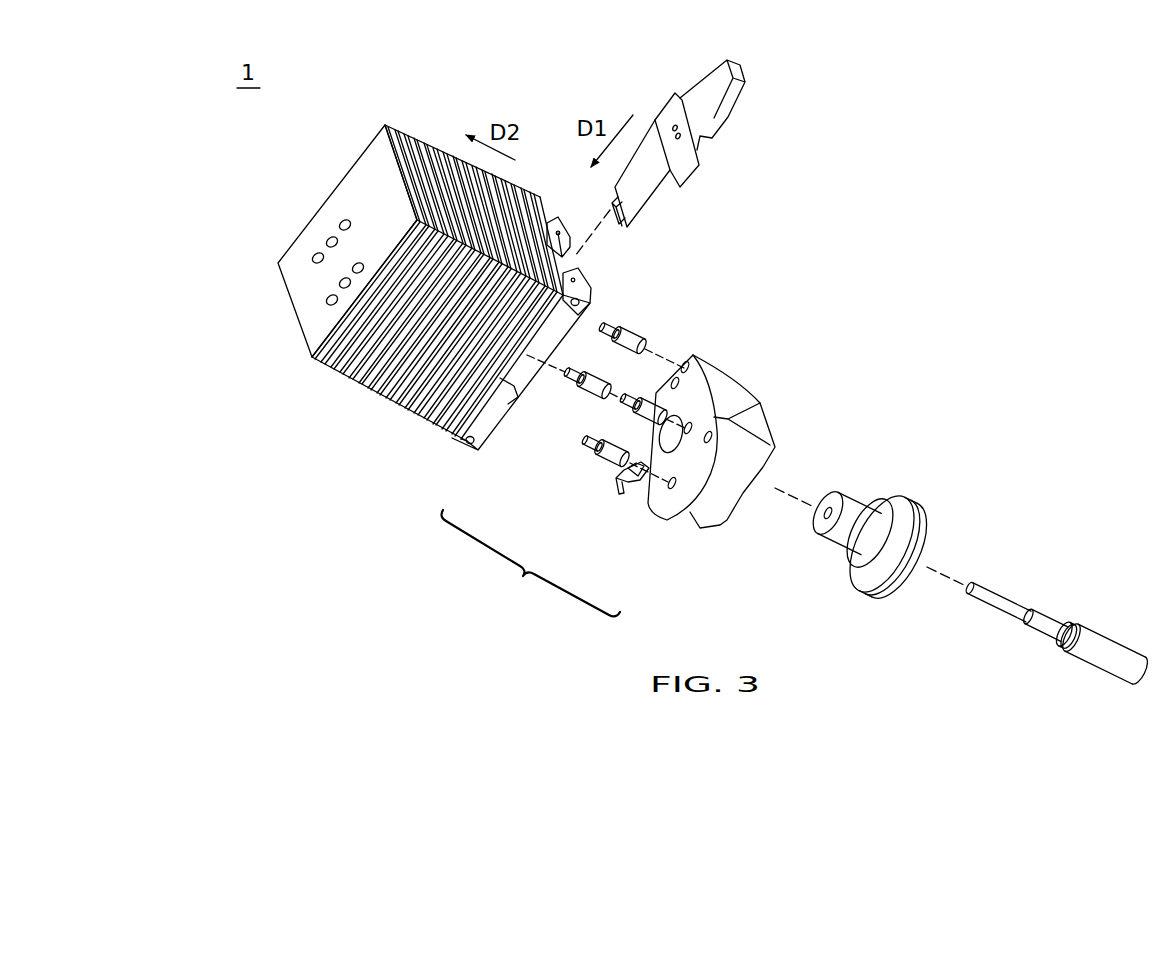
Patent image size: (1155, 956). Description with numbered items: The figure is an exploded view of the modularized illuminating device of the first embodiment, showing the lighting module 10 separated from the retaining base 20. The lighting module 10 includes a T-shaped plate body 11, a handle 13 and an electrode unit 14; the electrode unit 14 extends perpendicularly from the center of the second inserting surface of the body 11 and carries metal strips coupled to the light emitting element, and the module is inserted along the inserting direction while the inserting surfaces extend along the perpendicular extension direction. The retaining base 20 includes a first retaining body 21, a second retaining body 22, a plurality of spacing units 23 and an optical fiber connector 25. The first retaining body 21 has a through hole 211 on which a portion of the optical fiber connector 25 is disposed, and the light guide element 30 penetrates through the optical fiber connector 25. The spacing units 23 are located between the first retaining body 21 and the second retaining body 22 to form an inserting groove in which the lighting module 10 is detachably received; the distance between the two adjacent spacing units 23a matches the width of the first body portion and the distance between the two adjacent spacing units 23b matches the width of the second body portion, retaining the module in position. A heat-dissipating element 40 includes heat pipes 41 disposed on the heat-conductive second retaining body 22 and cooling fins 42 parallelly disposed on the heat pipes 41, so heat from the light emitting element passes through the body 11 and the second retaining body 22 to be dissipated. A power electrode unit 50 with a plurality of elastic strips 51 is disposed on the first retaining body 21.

The lighting module 10 is at (698, 150).
The body 11 is at (660, 198).
The handle 13 is at (716, 82).
The electrode unit 14 is at (611, 206).
The retaining base 20 is at (610, 463).
The first retaining body 21 is at (686, 470).
The through hole 211 is at (690, 366).
The second retaining body 22 is at (489, 449).
The spacing units 23 is at (597, 461).
The adjacent spacing units 23a is at (631, 336).
The adjacent spacing units 23b is at (592, 381).
The optical fiber connector 25 is at (926, 481).
The light guide element 30 is at (1021, 567).
The heat-dissipating element 40 is at (399, 323).
The heat pipes 41 is at (312, 256).
The cooling fins 42 is at (347, 178).
The power electrode unit 50 is at (610, 507).
The elastic strips 51 is at (630, 471).